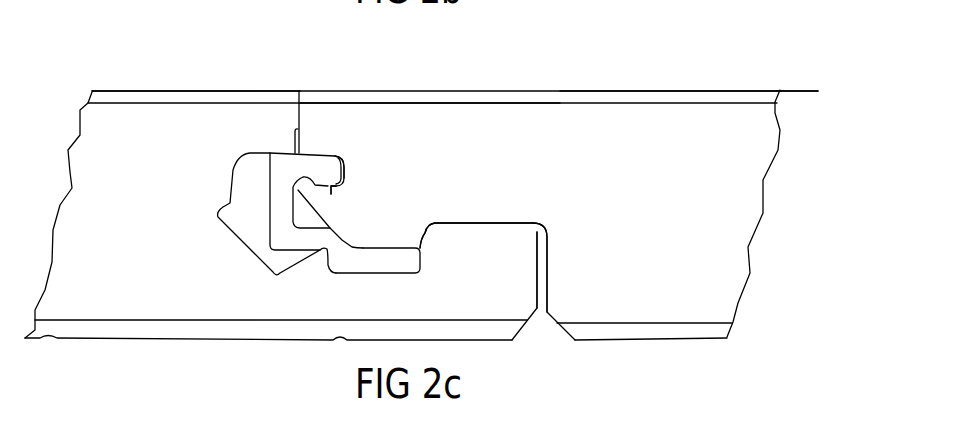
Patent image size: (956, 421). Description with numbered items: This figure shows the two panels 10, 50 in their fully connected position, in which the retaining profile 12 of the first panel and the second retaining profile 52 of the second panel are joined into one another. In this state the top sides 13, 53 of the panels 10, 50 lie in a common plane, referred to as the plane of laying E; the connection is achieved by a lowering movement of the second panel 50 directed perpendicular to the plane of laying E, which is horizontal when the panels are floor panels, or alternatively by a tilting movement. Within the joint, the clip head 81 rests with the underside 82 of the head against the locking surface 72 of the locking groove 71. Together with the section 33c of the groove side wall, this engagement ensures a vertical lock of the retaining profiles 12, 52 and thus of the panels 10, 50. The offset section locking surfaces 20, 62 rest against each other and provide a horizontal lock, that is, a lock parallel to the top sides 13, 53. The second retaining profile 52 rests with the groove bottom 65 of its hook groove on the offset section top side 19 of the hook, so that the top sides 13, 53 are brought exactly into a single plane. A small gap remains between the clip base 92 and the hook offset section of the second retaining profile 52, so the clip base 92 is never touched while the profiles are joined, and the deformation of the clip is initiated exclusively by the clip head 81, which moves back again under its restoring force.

The panel 10 is at (133, 80).
The second panel 50 is at (658, 80).
The top side 13 is at (216, 90).
The second retaining profile 52 is at (450, 108).
The top side 53 is at (557, 90).
The plane of laying E is at (797, 90).
The section of the groove side wall 33c is at (288, 152).
The clip head 81 is at (283, 172).
The underside of the head 82 is at (293, 187).
The locking groove 71 is at (345, 158).
The locking surface 72 is at (332, 196).
The clip base 92 is at (372, 263).
The offset section locking surface 20 is at (425, 233).
The offset section locking surface 62 is at (425, 233).
The groove bottom 65 is at (493, 224).
The offset section top side 19 is at (508, 226).
The retaining profile 12 is at (335, 292).